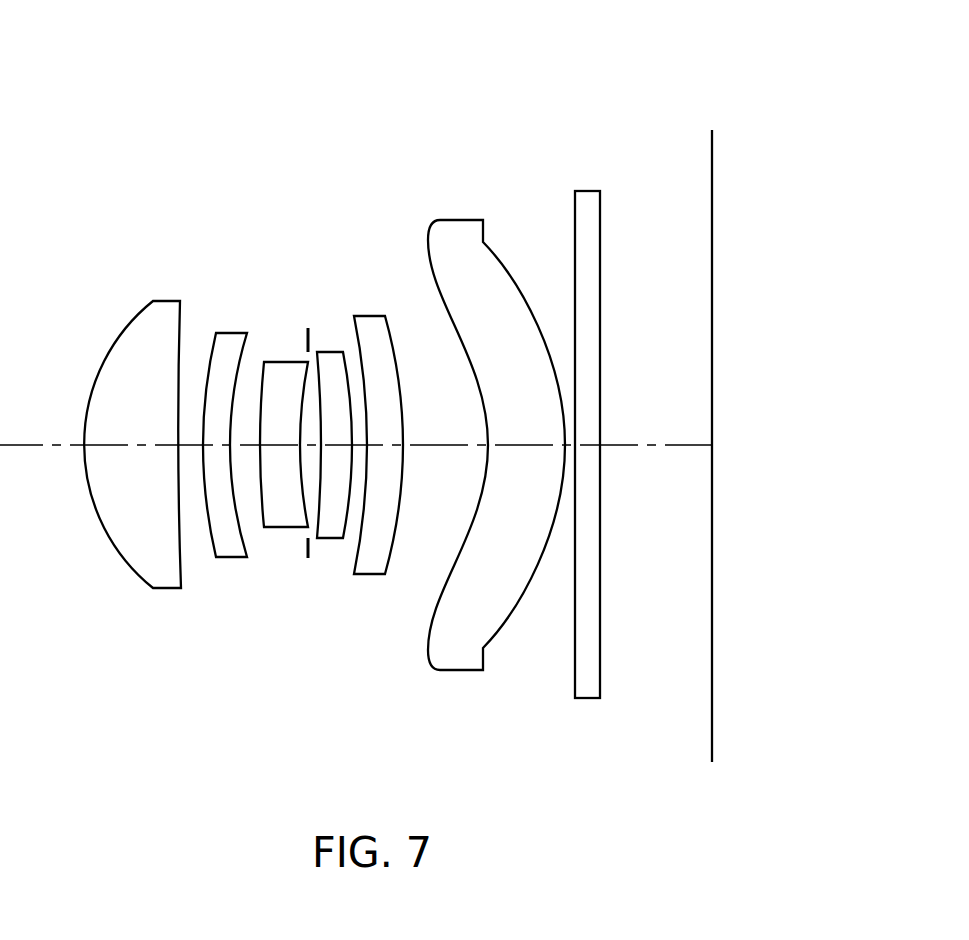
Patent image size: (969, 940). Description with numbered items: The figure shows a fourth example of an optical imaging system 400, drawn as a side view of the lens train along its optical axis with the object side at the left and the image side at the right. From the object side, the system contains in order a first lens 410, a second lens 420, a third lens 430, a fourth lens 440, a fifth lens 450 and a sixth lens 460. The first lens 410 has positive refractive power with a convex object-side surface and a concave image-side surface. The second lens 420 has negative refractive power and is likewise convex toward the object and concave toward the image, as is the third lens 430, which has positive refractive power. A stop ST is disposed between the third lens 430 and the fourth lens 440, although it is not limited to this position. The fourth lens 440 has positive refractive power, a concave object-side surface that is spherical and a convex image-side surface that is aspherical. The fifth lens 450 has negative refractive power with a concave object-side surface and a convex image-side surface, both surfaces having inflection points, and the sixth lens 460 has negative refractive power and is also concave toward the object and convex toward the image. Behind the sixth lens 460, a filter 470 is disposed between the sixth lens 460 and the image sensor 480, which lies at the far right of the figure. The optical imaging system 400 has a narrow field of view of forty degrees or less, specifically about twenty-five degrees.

The optical imaging system 400 is at (267, 200).
The first lens 410 is at (145, 567).
The second lens 420 is at (238, 550).
The third lens 430 is at (282, 522).
The stop ST is at (305, 333).
The fourth lens 440 is at (332, 535).
The fifth lens 450 is at (377, 565).
The sixth lens 460 is at (464, 672).
The filter 470 is at (587, 692).
The image sensor 480 is at (712, 153).